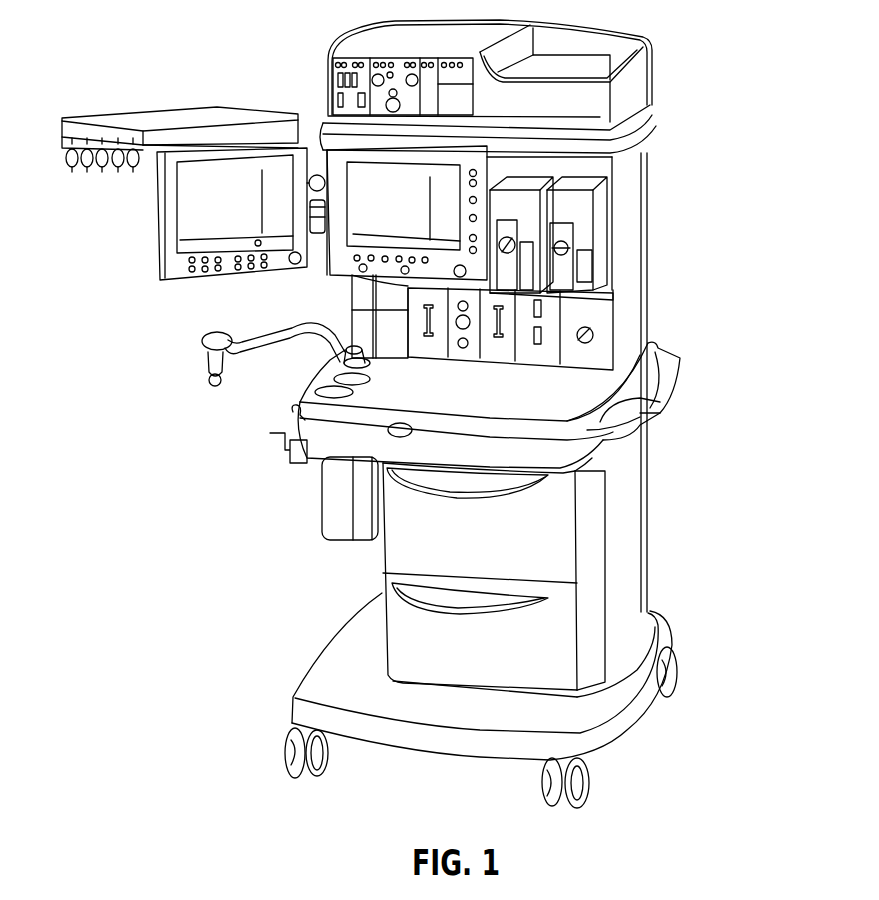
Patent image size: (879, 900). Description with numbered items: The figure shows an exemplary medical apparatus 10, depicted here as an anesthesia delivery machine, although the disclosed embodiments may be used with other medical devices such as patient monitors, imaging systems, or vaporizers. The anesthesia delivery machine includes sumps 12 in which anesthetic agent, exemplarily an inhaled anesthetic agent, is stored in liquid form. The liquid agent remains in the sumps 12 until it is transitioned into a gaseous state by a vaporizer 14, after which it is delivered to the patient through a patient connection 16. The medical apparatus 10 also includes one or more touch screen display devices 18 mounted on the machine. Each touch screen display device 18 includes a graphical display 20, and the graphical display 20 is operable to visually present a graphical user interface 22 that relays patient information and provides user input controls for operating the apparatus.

The medical apparatus 10 is at (696, 127).
The sumps 12 is at (527, 215).
The vaporizer 14 is at (593, 316).
The patient connection 16 is at (237, 372).
The touch screen display device 18 is at (163, 237).
The graphical display 20 is at (338, 170).
The graphical user interface 22 is at (240, 220).